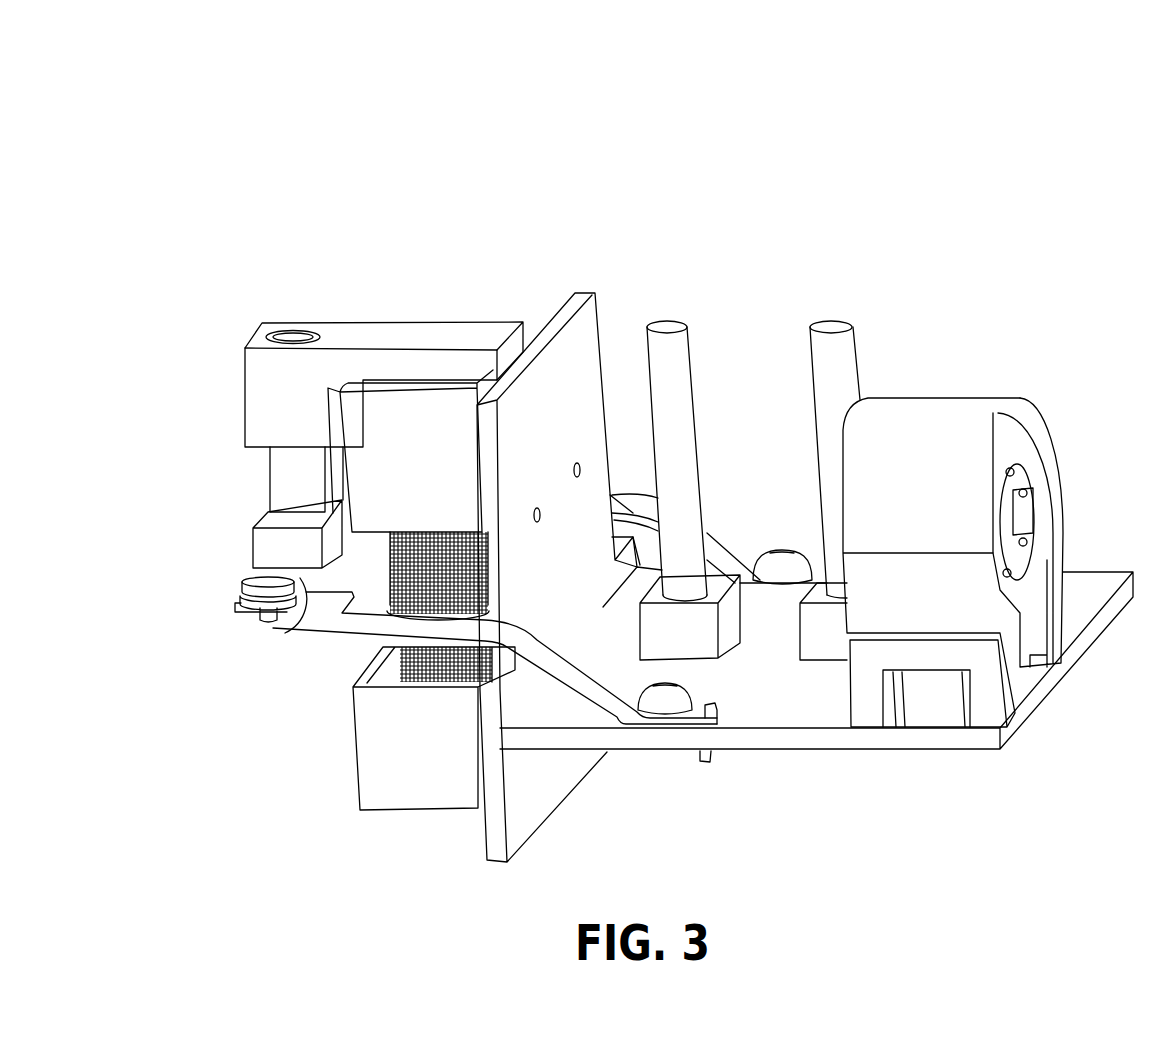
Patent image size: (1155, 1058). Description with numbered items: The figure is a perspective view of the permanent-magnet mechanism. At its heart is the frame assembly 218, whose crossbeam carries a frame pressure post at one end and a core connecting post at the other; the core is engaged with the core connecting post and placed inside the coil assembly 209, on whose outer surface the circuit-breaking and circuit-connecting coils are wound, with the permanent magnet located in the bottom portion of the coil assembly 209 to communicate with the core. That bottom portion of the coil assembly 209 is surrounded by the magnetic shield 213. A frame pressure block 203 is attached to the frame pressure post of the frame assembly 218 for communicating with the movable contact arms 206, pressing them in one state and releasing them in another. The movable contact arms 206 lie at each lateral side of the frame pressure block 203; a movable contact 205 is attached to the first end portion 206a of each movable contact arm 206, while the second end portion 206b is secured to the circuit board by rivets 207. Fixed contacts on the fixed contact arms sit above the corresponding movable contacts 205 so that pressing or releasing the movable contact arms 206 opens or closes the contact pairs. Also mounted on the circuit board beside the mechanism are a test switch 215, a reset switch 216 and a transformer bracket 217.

The frame pressure block 203 is at (278, 552).
The movable contact 205 is at (240, 588).
The movable contact arm 206 is at (408, 622).
The first end portion of the movable contact arm 206a is at (287, 633).
The second end portion of the movable contact arm 206b is at (710, 763).
The rivet 207 is at (660, 700).
The coil assembly 209 is at (387, 440).
The magnetic shield 213 is at (415, 773).
The test switch 215 is at (675, 355).
The reset switch 216 is at (836, 345).
The transformer bracket 217 is at (943, 458).
The frame assembly 218 is at (395, 333).